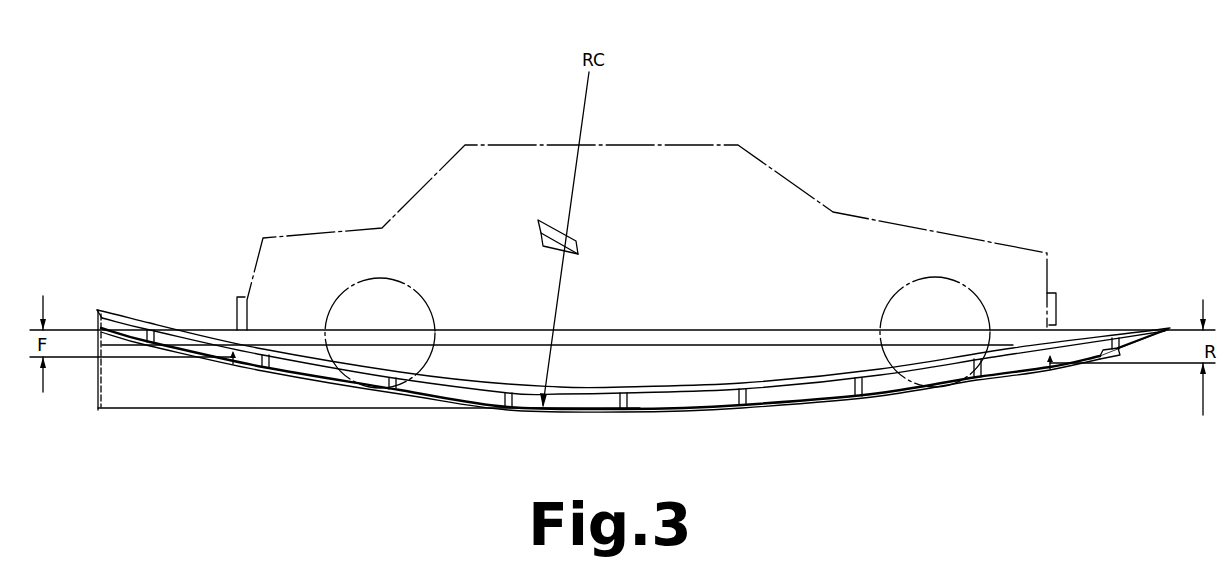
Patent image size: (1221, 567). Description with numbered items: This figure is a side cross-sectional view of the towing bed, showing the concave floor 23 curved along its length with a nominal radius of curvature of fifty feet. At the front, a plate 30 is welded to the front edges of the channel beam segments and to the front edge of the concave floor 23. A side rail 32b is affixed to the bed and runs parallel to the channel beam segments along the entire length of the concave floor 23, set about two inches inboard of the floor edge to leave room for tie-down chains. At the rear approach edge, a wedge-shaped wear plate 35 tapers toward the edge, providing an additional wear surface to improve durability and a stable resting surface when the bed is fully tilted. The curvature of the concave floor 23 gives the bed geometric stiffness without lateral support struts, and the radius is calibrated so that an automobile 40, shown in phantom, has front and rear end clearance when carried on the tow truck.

The automobile 40 is at (675, 138).
The side rail 32b is at (140, 319).
The plate 30 is at (99, 412).
The concave floor 23 is at (309, 378).
The wear plate 35 is at (1133, 345).